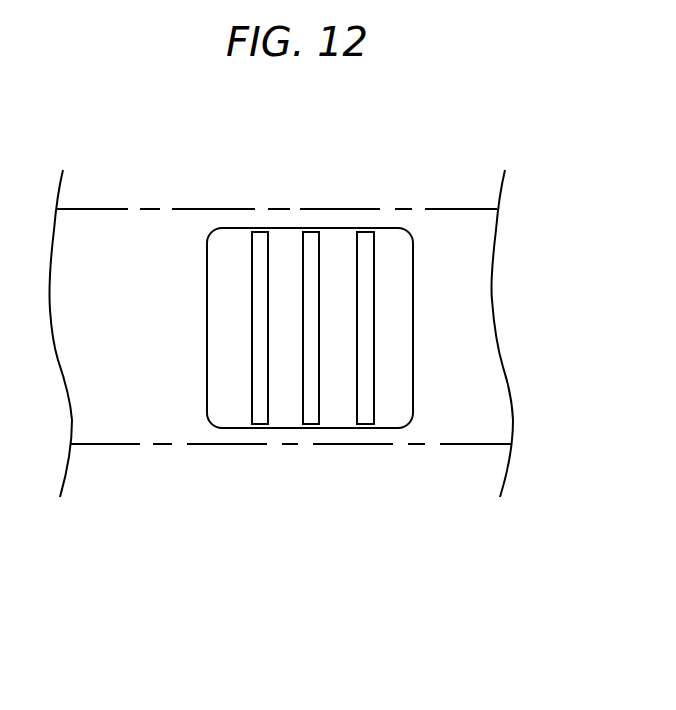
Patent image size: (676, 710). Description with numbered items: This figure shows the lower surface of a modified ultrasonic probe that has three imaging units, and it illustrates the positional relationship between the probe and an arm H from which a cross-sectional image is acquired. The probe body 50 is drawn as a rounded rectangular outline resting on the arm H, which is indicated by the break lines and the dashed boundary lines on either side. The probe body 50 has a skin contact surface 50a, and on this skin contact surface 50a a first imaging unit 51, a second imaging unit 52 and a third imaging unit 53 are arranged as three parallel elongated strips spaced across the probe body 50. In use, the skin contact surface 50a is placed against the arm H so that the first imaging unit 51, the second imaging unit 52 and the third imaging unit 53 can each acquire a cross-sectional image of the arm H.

The housing H is at (443, 209).
The probe body 50 is at (285, 228).
The skin contact surface 50a is at (240, 428).
The first imaging unit 51 is at (370, 428).
The second imaging unit 52 is at (308, 428).
The third imaging unit 53 is at (262, 428).